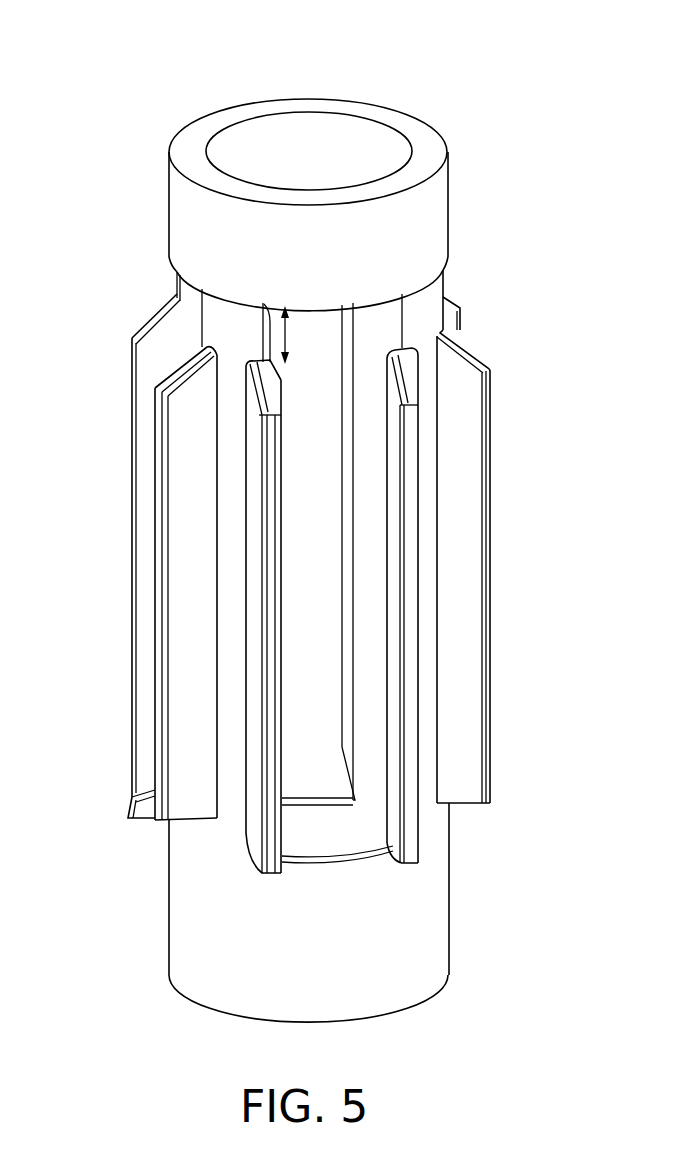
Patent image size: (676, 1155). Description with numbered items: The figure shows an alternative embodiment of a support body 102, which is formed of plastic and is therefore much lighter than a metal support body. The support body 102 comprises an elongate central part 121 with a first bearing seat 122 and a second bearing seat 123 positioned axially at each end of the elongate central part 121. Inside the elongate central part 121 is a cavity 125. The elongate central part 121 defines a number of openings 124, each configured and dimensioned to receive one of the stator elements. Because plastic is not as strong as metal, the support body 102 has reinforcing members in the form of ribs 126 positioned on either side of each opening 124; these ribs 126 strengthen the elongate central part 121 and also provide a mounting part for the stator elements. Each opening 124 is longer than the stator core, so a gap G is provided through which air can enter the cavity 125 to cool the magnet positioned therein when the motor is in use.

The support body 102 is at (310, 517).
The elongate central part 121 is at (227, 640).
The first bearing seat 122 is at (437, 213).
The second bearing seat 123 is at (437, 957).
The opening 124 is at (366, 333).
The cavity 125 is at (326, 550).
The ribs 126 is at (189, 473).